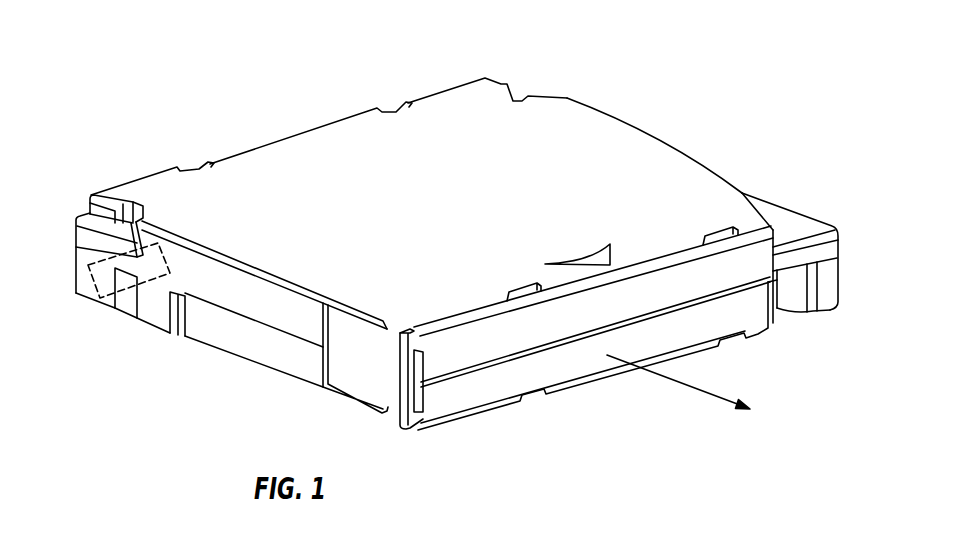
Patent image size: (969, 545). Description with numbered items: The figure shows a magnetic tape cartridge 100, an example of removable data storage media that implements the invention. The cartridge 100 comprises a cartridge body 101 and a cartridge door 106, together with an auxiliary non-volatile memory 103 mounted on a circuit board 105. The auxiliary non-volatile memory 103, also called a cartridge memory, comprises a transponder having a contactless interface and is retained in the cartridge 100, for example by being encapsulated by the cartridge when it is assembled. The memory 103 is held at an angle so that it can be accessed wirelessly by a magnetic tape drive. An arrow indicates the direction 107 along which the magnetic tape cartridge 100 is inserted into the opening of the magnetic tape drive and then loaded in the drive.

The magnetic tape cartridge 100 is at (759, 113).
The cartridge body 101 is at (347, 116).
The auxiliary non-volatile memory 103 is at (116, 204).
The circuit board 105 is at (103, 277).
The cartridge door 106 is at (373, 363).
The direction 107 is at (695, 387).